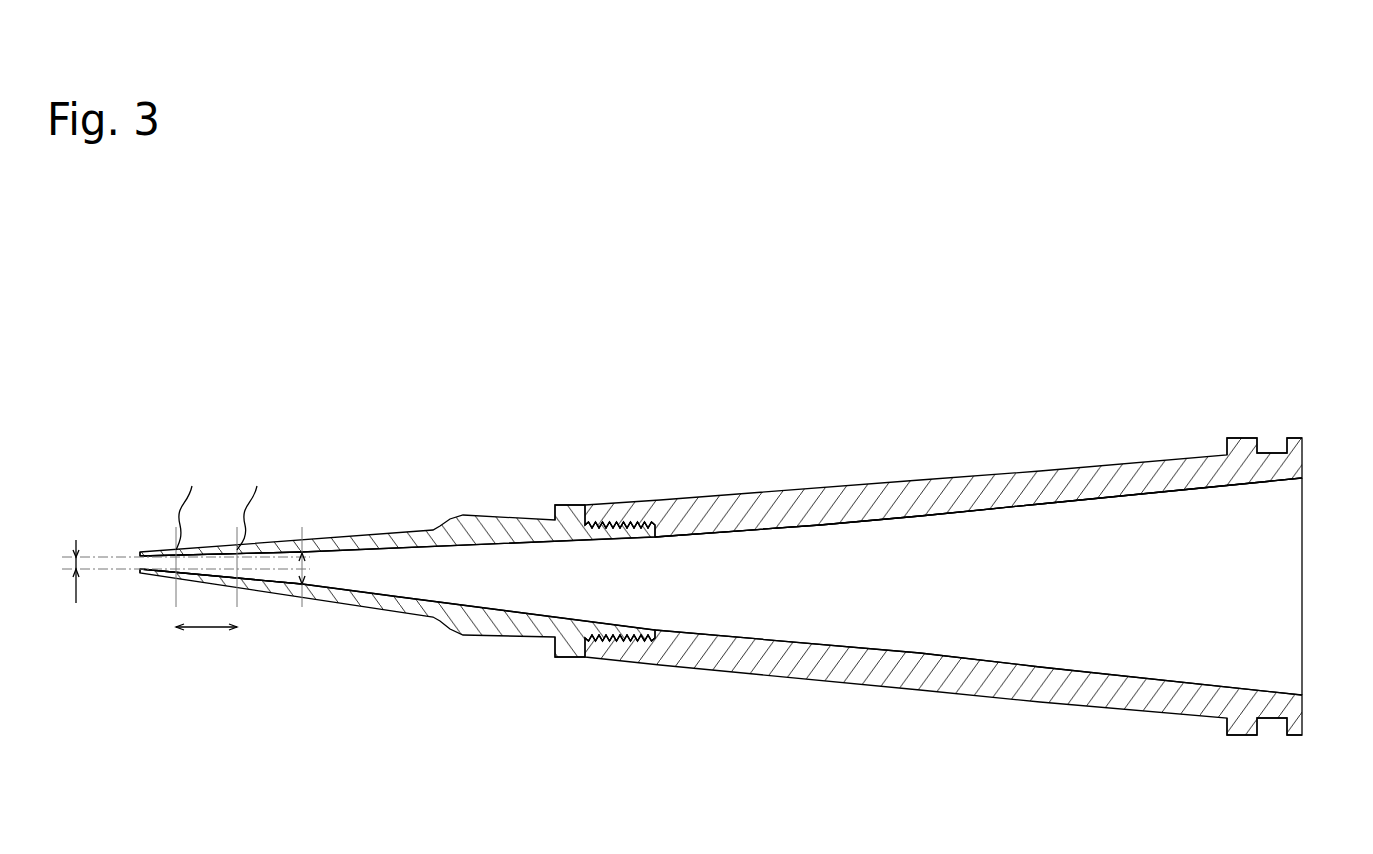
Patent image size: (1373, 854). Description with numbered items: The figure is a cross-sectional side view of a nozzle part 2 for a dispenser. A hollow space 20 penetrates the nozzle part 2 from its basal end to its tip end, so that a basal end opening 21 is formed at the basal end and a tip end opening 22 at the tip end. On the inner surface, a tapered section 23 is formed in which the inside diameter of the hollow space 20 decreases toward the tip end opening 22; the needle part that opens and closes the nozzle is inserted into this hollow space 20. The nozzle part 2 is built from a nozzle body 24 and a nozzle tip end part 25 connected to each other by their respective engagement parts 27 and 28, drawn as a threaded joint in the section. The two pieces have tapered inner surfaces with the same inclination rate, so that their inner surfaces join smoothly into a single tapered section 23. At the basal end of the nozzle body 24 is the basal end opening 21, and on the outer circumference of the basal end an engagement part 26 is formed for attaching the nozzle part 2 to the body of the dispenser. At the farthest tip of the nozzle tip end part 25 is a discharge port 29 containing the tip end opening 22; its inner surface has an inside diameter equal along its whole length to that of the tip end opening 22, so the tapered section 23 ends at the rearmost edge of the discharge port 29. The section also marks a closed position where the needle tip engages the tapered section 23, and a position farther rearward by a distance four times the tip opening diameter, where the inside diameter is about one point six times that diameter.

The nozzle part 2 is at (914, 394).
The hollow space 20 is at (1125, 657).
The basal end opening 21 is at (1303, 597).
The tip end opening 22 is at (132, 562).
The tapered section 23 is at (993, 509).
The nozzle body 24 is at (743, 516).
The nozzle tip end part 25 is at (406, 531).
The engagement part 26 is at (1242, 437).
The engagement part 27 is at (620, 655).
The engagement part 28 is at (568, 652).
The discharge port 29 is at (155, 572).